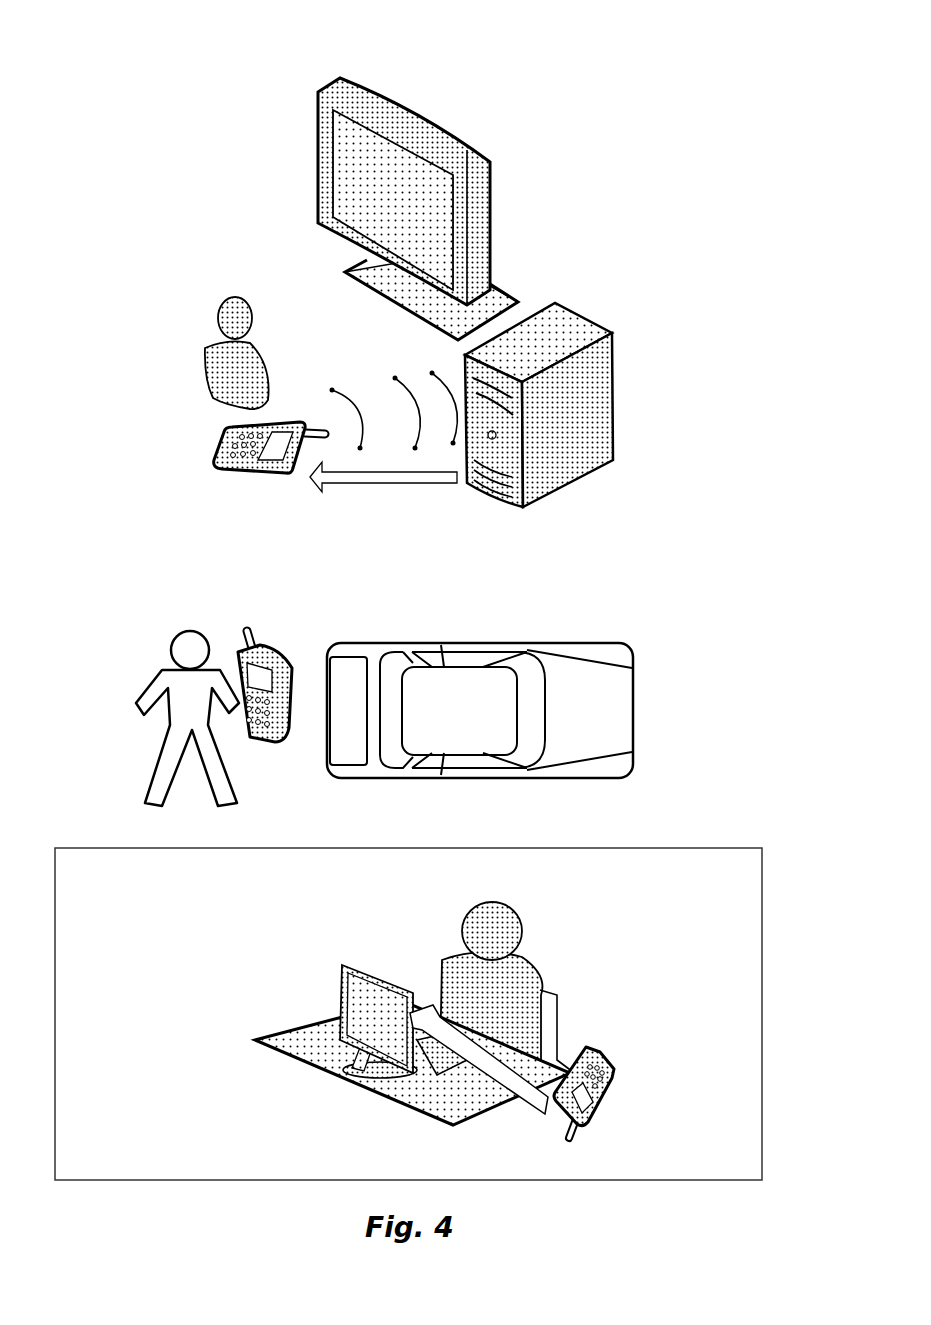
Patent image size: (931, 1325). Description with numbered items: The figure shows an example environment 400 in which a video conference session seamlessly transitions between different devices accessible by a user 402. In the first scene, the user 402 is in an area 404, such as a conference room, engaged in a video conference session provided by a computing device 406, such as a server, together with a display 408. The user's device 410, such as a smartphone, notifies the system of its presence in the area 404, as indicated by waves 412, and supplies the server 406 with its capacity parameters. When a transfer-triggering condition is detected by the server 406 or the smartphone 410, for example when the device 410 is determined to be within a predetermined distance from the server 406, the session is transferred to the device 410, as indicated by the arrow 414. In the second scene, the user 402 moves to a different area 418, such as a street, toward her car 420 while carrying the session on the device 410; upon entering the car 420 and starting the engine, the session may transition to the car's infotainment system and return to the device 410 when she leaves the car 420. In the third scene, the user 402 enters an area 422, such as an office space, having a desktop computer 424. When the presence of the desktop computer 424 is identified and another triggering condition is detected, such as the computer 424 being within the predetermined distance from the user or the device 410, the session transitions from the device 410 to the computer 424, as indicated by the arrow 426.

The environment 400 is at (703, 70).
The user 402 is at (207, 382).
The area 404 is at (763, 313).
The computing device 406 is at (615, 386).
The display 408 is at (492, 235).
The user device 410 is at (247, 477).
The waves 412 is at (393, 376).
The arrow 414 is at (433, 484).
The area 418 is at (763, 713).
The car 420 is at (633, 722).
The area 422 is at (762, 1013).
The user device 424 is at (342, 993).
The arrow 426 is at (542, 1107).